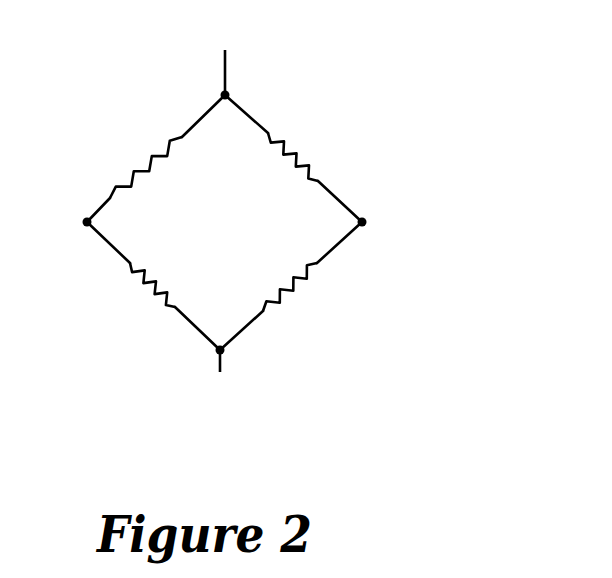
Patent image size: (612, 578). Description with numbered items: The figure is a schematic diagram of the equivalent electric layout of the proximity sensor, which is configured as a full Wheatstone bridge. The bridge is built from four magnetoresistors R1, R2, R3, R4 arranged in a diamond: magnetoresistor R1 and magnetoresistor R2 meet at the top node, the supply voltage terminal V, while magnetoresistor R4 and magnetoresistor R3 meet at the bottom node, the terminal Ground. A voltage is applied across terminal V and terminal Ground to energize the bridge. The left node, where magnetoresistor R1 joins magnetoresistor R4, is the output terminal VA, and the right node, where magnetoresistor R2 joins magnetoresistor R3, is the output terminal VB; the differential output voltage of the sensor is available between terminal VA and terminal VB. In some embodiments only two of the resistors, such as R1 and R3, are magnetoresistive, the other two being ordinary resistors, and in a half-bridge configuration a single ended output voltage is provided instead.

The magnetoresistor R1 is at (144, 151).
The magnetoresistor R2 is at (305, 149).
The magnetoresistor R3 is at (302, 301).
The magnetoresistor R4 is at (141, 299).
The supply voltage terminal V is at (227, 58).
The output terminal VA is at (66, 228).
The output terminal VB is at (383, 229).
The ground terminal Ground is at (222, 377).